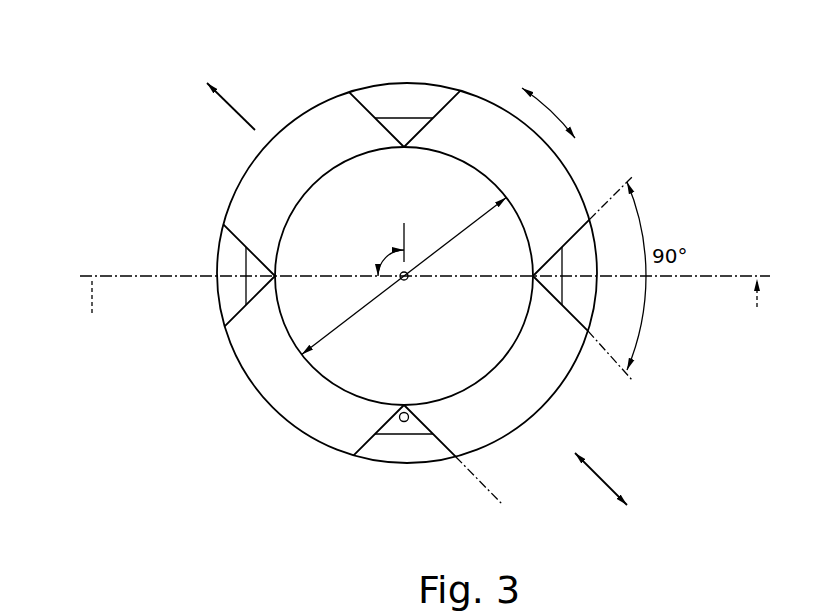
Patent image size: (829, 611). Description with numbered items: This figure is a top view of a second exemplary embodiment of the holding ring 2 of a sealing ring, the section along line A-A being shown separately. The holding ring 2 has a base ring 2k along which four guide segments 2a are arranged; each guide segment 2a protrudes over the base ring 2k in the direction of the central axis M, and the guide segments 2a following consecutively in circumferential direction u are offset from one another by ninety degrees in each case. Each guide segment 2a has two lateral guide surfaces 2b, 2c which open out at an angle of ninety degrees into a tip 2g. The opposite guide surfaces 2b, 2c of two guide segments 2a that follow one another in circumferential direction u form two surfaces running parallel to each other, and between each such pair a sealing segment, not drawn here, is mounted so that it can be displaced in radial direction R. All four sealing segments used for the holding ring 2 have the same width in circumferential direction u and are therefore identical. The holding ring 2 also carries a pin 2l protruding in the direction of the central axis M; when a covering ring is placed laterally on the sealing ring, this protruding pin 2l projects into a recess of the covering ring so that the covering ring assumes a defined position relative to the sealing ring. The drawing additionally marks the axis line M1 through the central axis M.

The holding ring 2 is at (608, 127).
The guide segment 2a is at (398, 128).
The lateral guide surface 2b is at (432, 120).
The lateral guide surface 2c is at (373, 118).
The tip 2g is at (404, 151).
The base ring 2k is at (533, 398).
The pin 2l is at (408, 421).
The central axis M is at (408, 279).
The center axis line M1 is at (347, 321).
The radial direction R is at (220, 90).
The circumferential direction u is at (540, 96).
The section line A- A is at (425, 309).